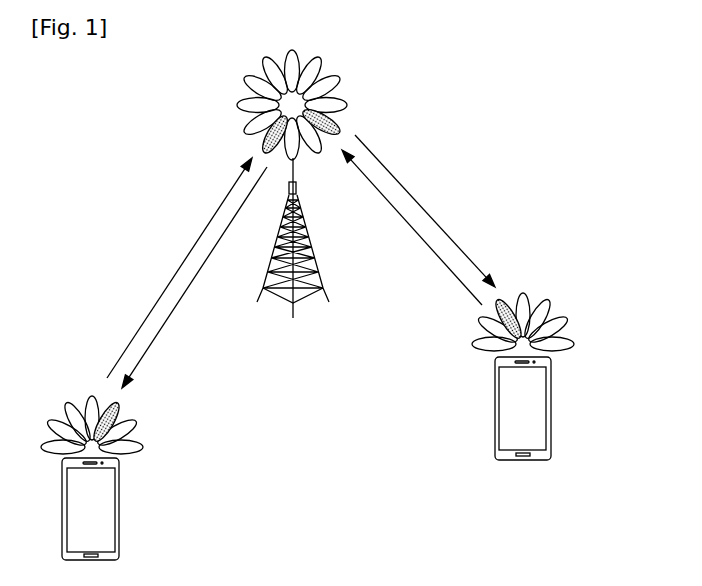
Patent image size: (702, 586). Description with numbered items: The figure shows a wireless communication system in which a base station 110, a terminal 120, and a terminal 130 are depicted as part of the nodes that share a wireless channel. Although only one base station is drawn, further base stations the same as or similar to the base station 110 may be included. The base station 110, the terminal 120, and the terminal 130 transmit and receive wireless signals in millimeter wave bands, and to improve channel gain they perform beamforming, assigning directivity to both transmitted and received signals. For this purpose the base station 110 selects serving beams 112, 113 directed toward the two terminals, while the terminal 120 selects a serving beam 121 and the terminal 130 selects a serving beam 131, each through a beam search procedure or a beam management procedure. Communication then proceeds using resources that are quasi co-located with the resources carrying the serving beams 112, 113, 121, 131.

The base station 110 is at (312, 237).
The serving beam 112 is at (262, 147).
The serving beam 113 is at (340, 130).
The terminal 120 is at (120, 487).
The serving beam 121 is at (118, 407).
The terminal 130 is at (552, 385).
The serving beam 131 is at (497, 310).